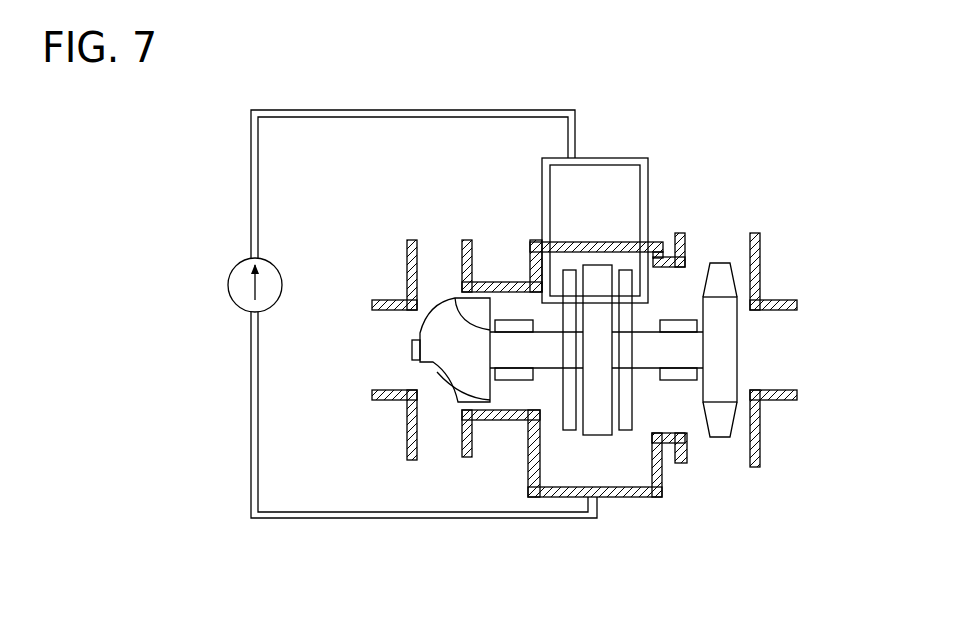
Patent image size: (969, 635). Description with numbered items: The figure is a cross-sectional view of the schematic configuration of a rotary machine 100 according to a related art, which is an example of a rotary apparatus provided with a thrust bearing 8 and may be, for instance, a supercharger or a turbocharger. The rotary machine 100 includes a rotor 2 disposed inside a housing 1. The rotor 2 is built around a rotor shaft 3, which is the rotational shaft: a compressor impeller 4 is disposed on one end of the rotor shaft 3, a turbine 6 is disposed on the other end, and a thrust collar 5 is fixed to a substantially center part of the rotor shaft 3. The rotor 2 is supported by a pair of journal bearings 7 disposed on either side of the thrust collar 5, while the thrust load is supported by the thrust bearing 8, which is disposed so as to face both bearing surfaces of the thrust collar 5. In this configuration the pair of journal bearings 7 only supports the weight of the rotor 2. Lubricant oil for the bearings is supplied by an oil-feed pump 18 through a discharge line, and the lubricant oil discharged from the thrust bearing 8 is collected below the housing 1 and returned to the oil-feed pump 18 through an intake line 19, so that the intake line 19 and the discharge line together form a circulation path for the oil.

The rotary machine 100 is at (723, 158).
The housing 1 is at (760, 252).
The rotor 2 is at (683, 295).
The rotor shaft 3 is at (545, 347).
The compressor impeller 4 is at (443, 370).
The thrust collar 5 is at (598, 437).
The turbine 6 is at (717, 347).
The journal bearings 7 is at (515, 380).
The thrust bearing 8 is at (633, 405).
The oil-feed pump 18 is at (230, 272).
The intake line 19 is at (250, 452).